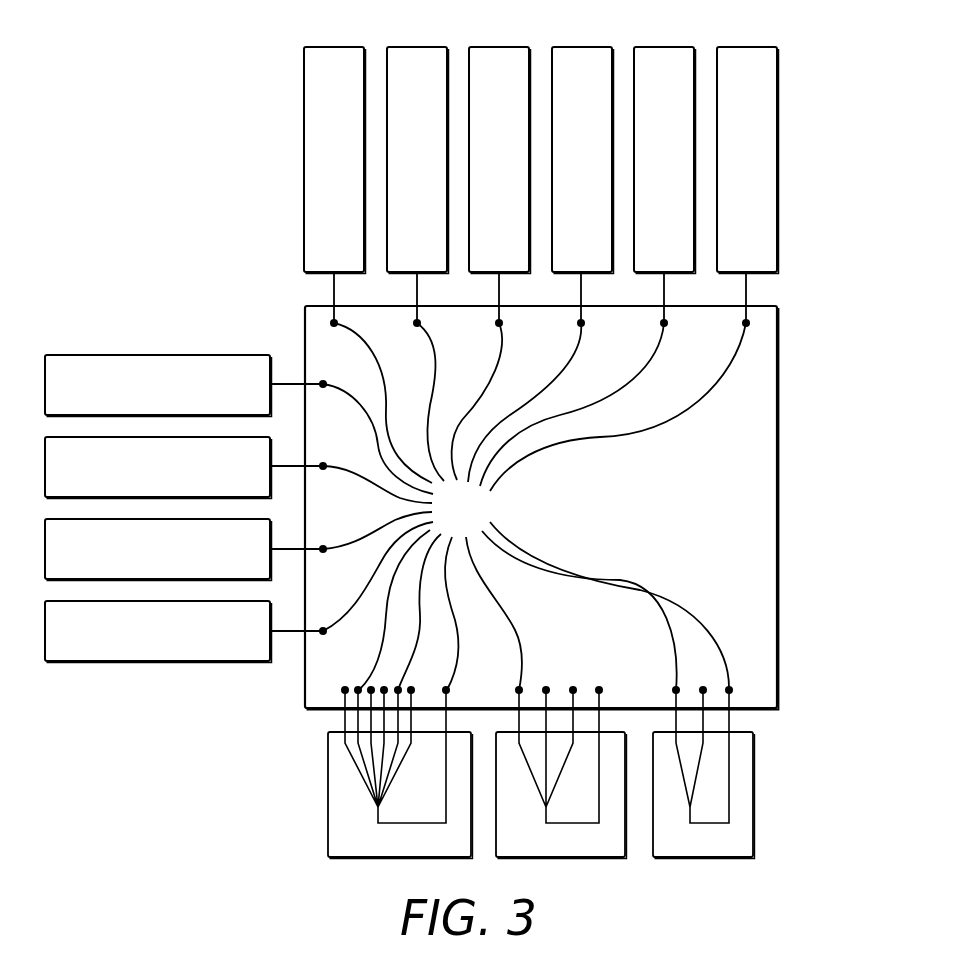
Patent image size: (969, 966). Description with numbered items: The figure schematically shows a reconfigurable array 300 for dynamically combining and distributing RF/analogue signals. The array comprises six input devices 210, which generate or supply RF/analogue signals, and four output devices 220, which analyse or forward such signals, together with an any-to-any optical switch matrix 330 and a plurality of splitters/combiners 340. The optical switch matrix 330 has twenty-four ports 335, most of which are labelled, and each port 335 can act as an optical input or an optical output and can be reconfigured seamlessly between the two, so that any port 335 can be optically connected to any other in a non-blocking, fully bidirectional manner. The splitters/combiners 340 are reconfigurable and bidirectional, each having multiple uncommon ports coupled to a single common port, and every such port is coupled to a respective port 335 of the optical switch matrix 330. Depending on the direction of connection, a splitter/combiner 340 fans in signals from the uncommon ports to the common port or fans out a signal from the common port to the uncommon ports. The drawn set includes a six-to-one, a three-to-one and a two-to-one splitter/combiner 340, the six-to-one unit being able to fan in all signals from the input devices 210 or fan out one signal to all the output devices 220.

The reconfigurable array 300 is at (106, 71).
The input devices 210 is at (802, 78).
The output devices 220 is at (93, 333).
The optical switch matrix 330 is at (802, 340).
The ports 335 is at (534, 506).
The splitters/combiners 340 is at (302, 824).